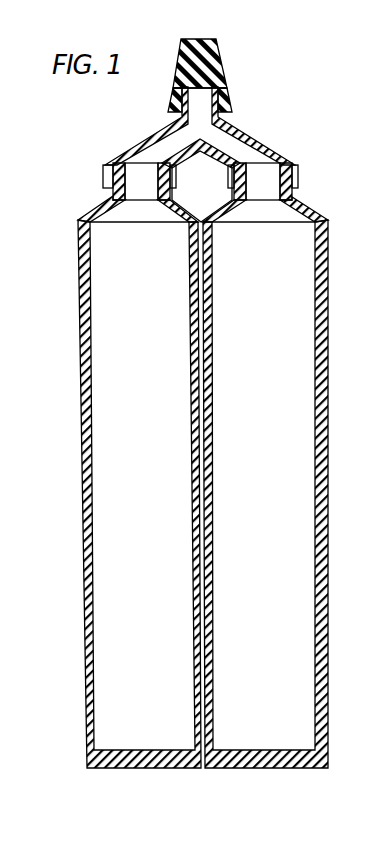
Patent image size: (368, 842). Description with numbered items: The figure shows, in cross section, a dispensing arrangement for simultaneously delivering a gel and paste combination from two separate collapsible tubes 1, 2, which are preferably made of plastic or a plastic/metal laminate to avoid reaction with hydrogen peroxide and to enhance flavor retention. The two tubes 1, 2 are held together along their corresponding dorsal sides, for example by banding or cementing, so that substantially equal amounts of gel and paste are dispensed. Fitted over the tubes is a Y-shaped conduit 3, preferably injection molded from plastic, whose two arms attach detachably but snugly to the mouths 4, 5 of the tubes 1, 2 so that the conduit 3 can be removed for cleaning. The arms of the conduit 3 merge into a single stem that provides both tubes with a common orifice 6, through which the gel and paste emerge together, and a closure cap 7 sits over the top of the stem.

The tube 1 is at (80, 354).
The tube 2 is at (334, 369).
The Y-shaped conduit 3 is at (137, 140).
The mouth 4 is at (102, 177).
The mouth 5 is at (297, 181).
The common orifice 6 is at (234, 100).
The closure cap 7 is at (222, 52).